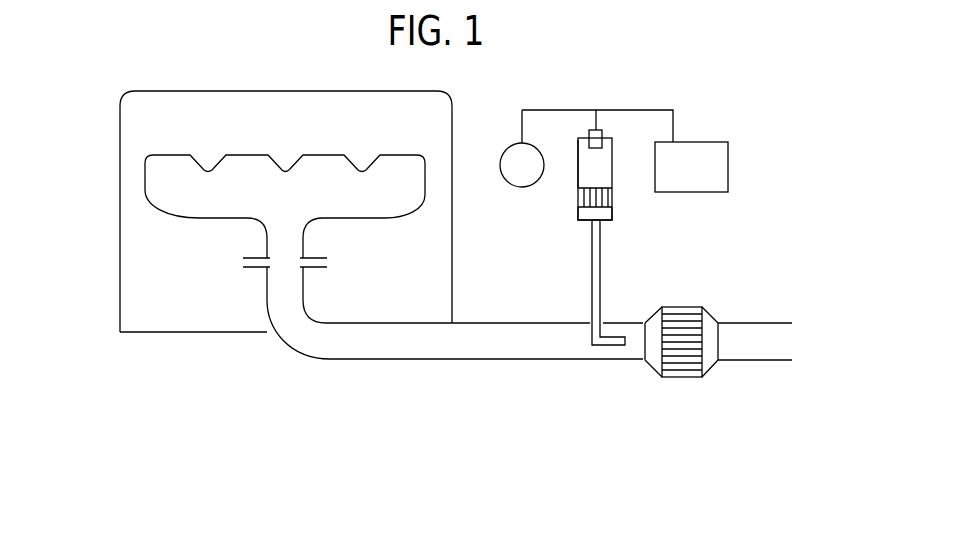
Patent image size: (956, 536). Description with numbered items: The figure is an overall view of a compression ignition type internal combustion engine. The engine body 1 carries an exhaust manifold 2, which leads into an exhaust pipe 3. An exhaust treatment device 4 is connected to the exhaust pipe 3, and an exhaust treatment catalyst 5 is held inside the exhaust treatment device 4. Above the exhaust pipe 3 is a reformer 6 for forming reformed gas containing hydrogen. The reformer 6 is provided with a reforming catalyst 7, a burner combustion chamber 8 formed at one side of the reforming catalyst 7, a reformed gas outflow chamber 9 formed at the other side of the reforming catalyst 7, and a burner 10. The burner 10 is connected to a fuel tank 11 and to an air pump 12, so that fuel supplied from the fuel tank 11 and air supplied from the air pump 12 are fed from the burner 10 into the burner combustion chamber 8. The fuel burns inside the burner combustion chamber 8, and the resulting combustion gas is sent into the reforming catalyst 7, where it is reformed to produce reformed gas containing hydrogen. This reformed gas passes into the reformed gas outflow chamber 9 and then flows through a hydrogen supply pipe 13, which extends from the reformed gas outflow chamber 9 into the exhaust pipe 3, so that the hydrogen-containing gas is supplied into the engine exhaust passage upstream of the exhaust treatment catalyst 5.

The engine body 1 is at (140, 136).
The exhaust manifold 2 is at (175, 188).
The exhaust pipe 3 is at (347, 352).
The exhaust treatment device 4 is at (710, 308).
The exhaust treatment catalyst 5 is at (683, 350).
The reformer 6 is at (578, 191).
The reforming catalyst 7 is at (612, 196).
The burner combustion chamber 8 is at (588, 167).
The reformed gas outflow chamber 9 is at (612, 213).
The burner 10 is at (589, 140).
The fuel tank 11 is at (728, 165).
The air pump 12 is at (513, 157).
The hydrogen supply pipe 13 is at (600, 282).